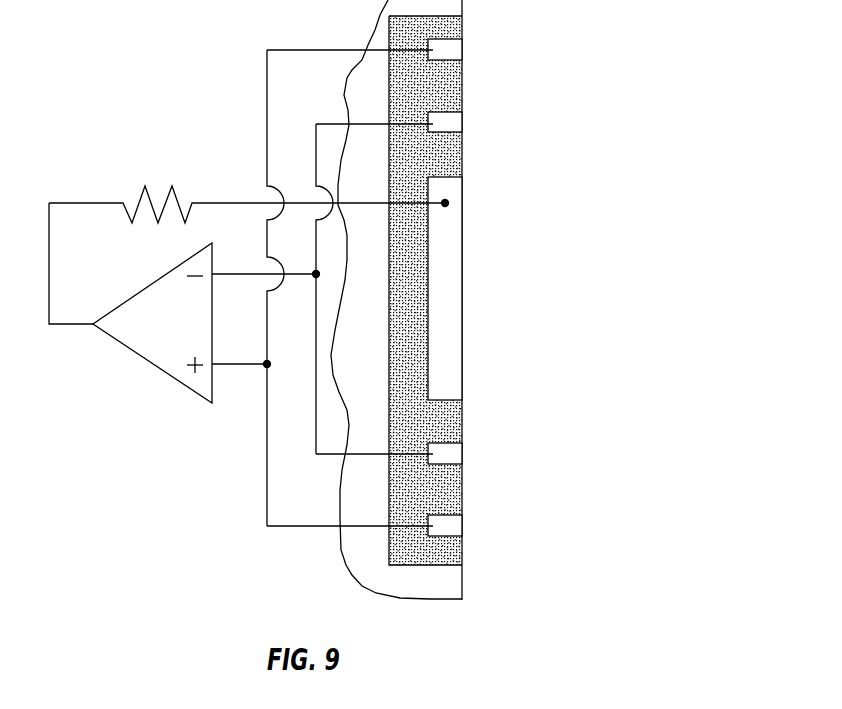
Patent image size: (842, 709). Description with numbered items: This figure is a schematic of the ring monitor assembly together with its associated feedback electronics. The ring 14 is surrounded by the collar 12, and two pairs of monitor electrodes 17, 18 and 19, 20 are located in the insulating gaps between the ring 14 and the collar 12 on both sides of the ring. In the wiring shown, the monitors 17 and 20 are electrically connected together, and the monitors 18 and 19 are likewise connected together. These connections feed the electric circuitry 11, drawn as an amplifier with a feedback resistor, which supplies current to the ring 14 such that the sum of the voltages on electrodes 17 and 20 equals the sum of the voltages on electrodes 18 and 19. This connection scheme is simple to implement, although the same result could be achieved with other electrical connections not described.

The electric circuitry 11 is at (146, 323).
The collar 12 is at (423, 300).
The ring 14 is at (472, 288).
The monitor electrode 17 is at (392, 43).
The monitor electrode 18 is at (416, 116).
The monitor electrode 19 is at (416, 448).
The monitor electrode 20 is at (391, 519).